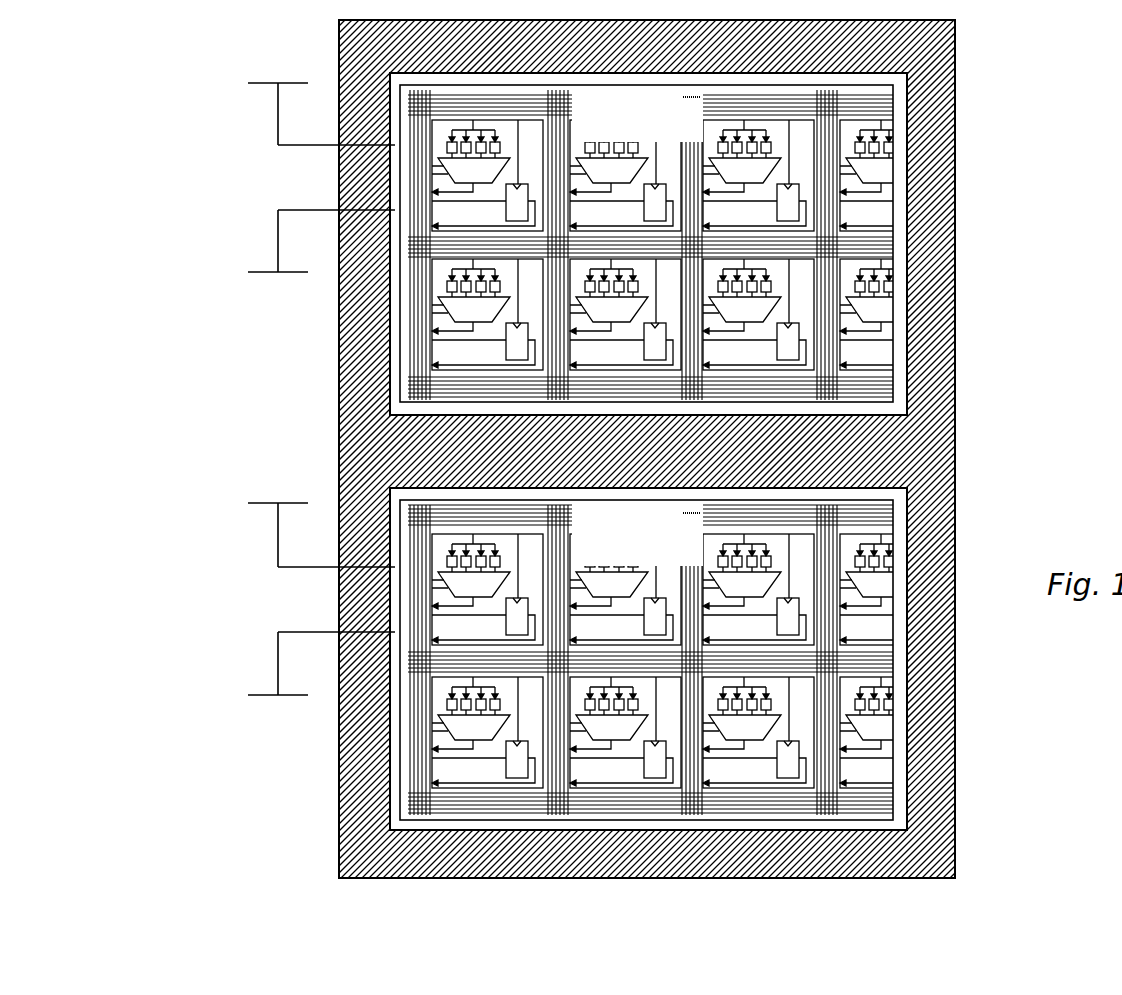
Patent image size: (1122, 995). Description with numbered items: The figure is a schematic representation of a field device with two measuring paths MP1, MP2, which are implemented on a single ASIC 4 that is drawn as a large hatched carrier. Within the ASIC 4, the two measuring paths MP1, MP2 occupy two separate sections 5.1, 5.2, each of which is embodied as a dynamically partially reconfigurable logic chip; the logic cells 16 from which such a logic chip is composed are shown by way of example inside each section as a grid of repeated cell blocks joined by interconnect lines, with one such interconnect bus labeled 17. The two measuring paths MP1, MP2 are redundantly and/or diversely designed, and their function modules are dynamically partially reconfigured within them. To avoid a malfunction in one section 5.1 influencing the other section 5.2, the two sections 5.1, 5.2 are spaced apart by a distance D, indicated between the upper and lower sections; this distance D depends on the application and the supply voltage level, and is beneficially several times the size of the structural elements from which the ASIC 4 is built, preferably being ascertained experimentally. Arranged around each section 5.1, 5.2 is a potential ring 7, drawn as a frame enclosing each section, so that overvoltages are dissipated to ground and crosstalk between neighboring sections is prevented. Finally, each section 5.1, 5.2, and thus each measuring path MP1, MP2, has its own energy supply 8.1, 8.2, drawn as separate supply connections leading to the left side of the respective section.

The ASIC 4 is at (958, 455).
The first section 5.1 is at (662, 446).
The second section 5.2 is at (622, 682).
The potential ring 7 is at (895, 352).
The energy supply 8.1 is at (270, 139).
The energy supply 8.2 is at (274, 557).
The logic cells 16 is at (496, 550).
The interconnect bus 17 is at (893, 803).
The first measuring path MP1 is at (891, 191).
The second measuring path MP2 is at (891, 706).
The distance D is at (217, 417).